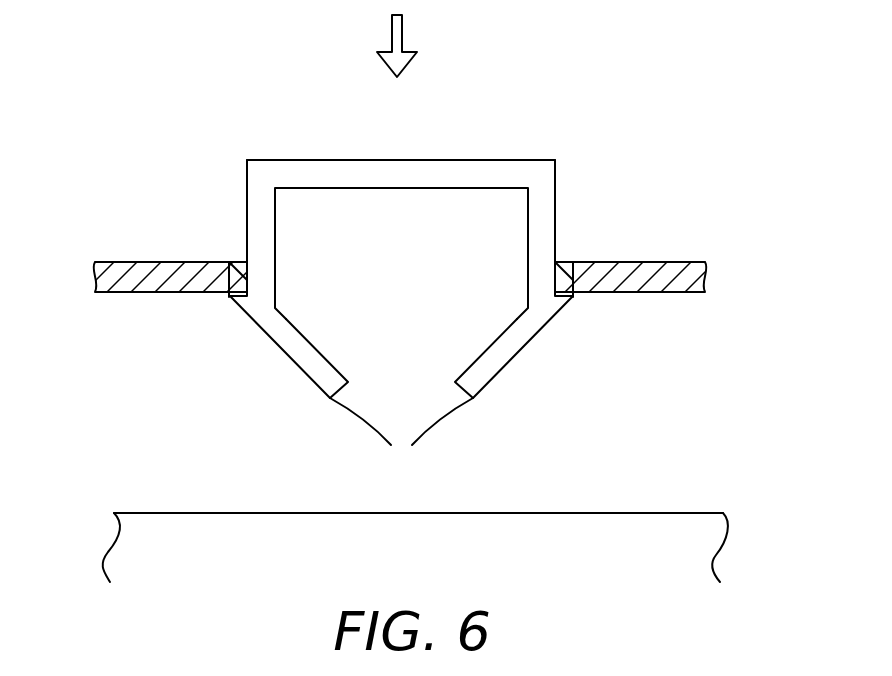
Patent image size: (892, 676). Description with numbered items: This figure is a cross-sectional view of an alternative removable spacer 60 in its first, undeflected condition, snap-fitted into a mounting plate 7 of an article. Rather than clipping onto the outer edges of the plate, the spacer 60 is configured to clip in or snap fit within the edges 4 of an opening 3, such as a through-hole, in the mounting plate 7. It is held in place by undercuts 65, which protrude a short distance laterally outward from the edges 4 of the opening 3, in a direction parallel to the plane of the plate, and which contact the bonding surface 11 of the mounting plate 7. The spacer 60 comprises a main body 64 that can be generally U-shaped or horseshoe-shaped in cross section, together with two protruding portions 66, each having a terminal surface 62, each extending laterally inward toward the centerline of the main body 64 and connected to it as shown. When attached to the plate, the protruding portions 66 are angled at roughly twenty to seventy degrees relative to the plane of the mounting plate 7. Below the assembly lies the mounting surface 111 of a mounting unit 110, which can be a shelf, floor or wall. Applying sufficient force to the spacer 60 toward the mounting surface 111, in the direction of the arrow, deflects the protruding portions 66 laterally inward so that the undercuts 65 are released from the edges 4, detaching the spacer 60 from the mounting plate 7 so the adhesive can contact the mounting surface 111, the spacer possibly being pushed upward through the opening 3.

The removable spacer 60 is at (295, 168).
The main body 64 is at (467, 168).
The opening 3 is at (432, 280).
The protruding portions 66 is at (280, 337).
The undercuts 65 is at (560, 305).
The terminal surface 62 is at (401, 443).
The edges 4 is at (222, 262).
The mounting plate 7 is at (130, 268).
The bonding surface 11 is at (123, 293).
The mounting unit 110 is at (125, 550).
The mounting surface 111 is at (267, 512).